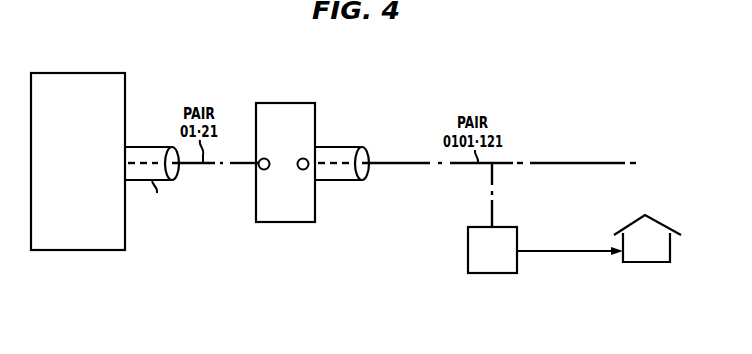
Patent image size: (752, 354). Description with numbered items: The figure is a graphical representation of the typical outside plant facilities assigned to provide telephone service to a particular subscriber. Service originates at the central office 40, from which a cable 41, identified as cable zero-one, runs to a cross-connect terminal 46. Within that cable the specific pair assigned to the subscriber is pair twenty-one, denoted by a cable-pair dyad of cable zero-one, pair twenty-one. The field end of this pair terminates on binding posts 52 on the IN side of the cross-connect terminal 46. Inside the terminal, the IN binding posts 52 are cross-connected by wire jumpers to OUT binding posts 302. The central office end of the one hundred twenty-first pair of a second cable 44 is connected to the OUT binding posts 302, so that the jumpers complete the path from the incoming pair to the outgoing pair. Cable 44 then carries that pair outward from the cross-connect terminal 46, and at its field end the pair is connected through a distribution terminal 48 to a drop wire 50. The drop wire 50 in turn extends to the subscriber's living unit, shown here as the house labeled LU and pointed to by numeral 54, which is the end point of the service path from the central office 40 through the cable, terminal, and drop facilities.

The central office 40 is at (73, 251).
The cable 41 is at (143, 147).
The binding posts 52 is at (262, 158).
The OUT binding posts 302 is at (305, 158).
The cable 44 is at (345, 180).
The cross-connect terminal 46 is at (306, 205).
The distribution terminal 48 is at (468, 252).
The drop wire 50 is at (573, 249).
The living unit 54 is at (670, 253).